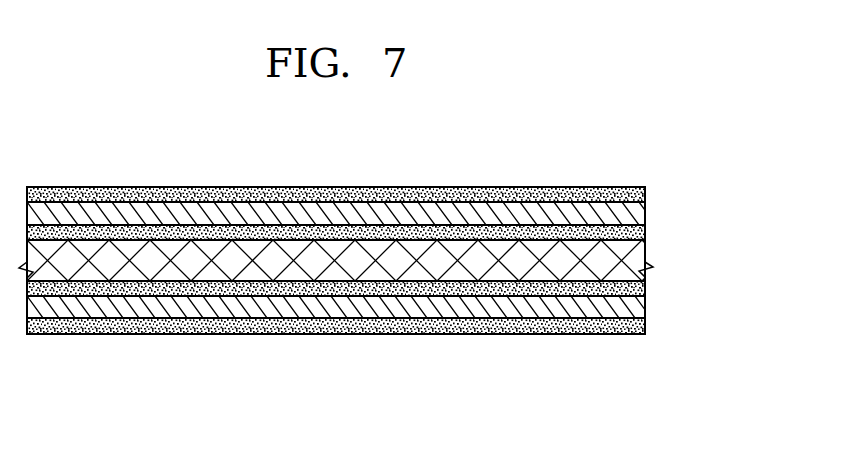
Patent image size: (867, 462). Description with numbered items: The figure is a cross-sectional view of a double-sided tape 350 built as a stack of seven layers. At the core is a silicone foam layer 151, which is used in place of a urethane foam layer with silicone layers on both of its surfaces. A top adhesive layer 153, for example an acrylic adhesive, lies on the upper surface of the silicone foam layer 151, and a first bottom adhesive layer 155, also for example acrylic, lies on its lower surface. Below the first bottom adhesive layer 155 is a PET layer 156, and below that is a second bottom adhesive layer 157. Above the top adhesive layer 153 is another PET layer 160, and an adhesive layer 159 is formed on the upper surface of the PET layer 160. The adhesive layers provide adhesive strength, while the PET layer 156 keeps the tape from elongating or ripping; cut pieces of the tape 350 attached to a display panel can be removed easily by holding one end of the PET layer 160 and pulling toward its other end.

The double-sided tape 350 is at (734, 178).
The adhesive layer 159 is at (645, 194).
The PET layer 160 is at (640, 213).
The top adhesive layer 153 is at (645, 232).
The silicone foam layer 151 is at (650, 266).
The first bottom adhesive layer 155 is at (645, 288).
The PET layer 156 is at (640, 305).
The second bottom adhesive layer 157 is at (645, 327).